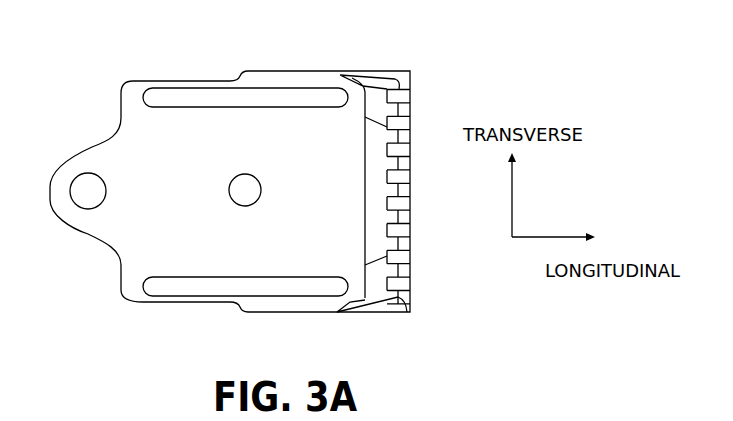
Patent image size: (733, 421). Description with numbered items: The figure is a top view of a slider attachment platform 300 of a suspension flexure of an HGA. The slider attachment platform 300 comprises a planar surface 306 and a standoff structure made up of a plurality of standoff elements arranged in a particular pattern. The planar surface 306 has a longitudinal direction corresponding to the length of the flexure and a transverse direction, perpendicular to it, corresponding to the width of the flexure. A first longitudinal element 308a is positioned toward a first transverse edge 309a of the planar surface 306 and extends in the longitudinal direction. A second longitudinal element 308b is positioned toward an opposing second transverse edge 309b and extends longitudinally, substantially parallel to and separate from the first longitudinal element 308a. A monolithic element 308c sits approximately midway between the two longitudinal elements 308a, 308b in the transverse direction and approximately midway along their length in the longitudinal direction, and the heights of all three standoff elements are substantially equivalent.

The slider attachment platform 300 is at (98, 59).
The planar surface 306 is at (115, 225).
The first longitudinal element 308a is at (327, 288).
The second longitudinal element 308b is at (270, 98).
The monolithic element 308c is at (252, 190).
The first transverse edge 309a is at (305, 316).
The second transverse edge 309b is at (318, 70).